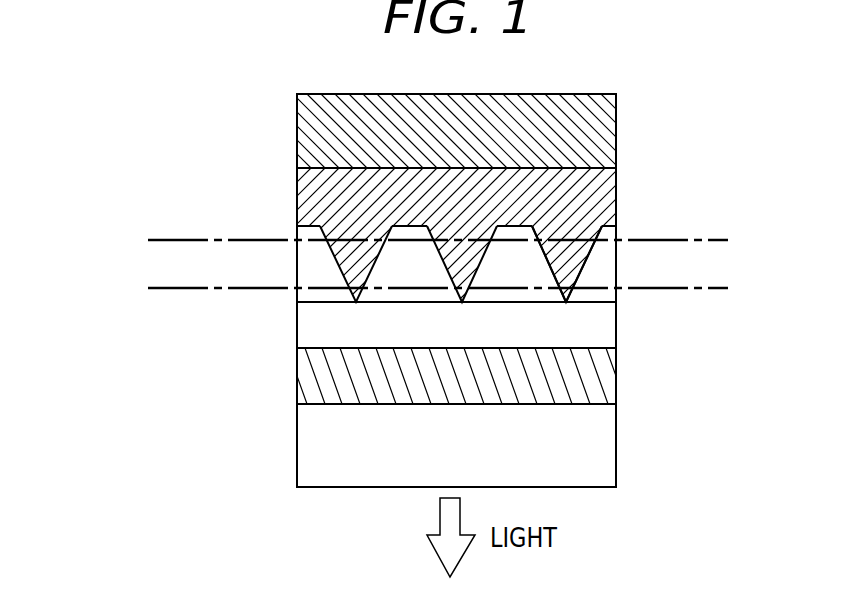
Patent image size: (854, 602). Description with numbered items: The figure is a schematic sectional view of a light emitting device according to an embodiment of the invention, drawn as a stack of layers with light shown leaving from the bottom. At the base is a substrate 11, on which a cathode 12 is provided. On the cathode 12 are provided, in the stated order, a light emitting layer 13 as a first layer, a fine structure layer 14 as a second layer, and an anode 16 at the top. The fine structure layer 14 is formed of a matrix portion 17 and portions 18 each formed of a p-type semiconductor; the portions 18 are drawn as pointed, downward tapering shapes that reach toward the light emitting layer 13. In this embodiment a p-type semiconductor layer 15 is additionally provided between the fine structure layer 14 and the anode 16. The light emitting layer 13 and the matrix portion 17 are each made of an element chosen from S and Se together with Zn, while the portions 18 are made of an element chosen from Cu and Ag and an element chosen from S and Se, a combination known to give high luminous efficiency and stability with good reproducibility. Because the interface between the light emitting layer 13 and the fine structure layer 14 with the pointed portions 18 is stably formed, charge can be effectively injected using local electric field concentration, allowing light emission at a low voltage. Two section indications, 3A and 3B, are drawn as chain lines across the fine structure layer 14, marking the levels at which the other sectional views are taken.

The substrate 11 is at (303, 451).
The cathode 12 is at (303, 377).
The light emitting layer 13 is at (303, 328).
The fine structure layer 14 is at (281, 302).
The p-type semiconductor layer 15 is at (305, 184).
The anode 16 is at (616, 115).
The matrix portion 17 is at (608, 273).
The portions 18 is at (587, 260).
The section line 3A is at (438, 287).
The section line 3B is at (438, 239).